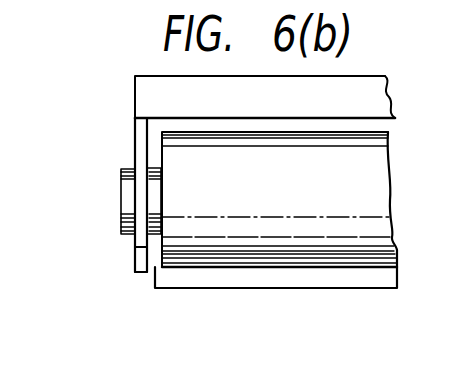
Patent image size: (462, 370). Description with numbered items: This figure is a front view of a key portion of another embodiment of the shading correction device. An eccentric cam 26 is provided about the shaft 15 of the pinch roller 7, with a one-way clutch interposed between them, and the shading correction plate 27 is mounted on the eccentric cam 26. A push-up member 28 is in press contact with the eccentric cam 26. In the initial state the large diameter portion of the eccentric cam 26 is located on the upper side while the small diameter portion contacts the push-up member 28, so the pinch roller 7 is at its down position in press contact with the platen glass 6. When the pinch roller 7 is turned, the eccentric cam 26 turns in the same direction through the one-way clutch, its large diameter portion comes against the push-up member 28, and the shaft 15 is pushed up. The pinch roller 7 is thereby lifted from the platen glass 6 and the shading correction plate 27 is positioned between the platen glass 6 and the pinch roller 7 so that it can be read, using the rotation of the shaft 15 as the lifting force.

The shading correction plate 27 is at (155, 89).
The eccentric cam 26 is at (145, 145).
The push-up member 28 is at (140, 258).
The shaft 15 is at (128, 196).
The pinch roller 7 is at (372, 203).
The platen glass 6 is at (258, 282).